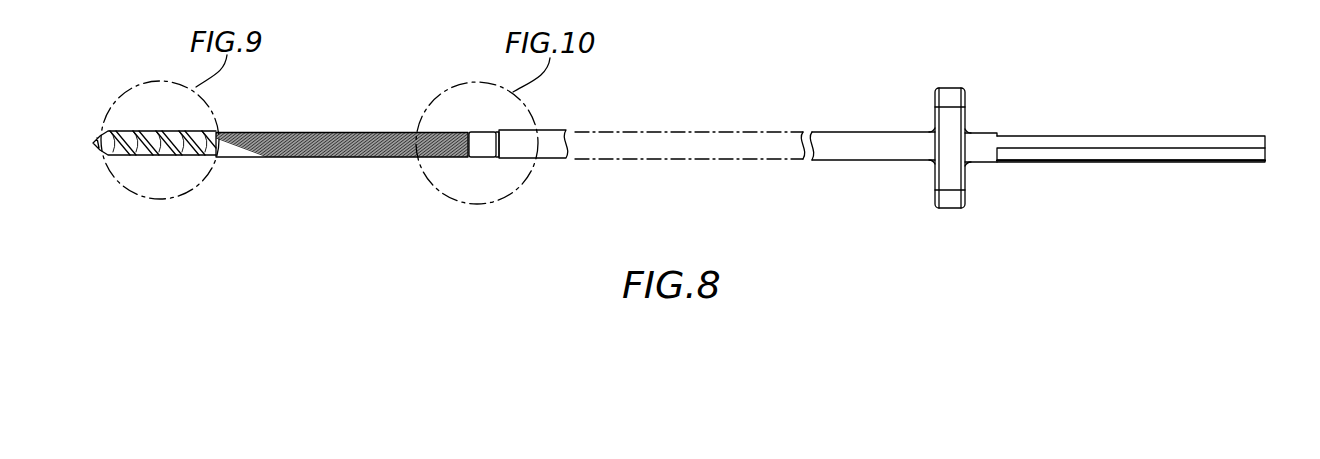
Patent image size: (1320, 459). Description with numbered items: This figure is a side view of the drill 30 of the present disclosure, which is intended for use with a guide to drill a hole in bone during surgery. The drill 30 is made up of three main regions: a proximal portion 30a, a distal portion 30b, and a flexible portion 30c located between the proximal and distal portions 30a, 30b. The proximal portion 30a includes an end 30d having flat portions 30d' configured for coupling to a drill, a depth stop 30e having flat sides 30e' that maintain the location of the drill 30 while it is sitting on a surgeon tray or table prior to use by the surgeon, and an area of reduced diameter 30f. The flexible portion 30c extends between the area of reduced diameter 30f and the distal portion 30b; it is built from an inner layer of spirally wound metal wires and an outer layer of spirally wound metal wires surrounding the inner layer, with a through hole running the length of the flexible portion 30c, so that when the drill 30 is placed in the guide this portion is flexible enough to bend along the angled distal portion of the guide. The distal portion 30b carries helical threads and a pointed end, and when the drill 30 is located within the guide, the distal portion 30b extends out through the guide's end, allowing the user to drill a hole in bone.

The drill 30 is at (849, 87).
The proximal portion 30a is at (1265, 165).
The distal portion 30b is at (95, 165).
The flexible portion 30c is at (218, 160).
The end 30d is at (1131, 140).
The flat portions 30d' is at (1131, 149).
The depth stop 30e is at (981, 124).
The flat sides 30e' is at (981, 148).
The area of reduced diameter 30f is at (487, 142).